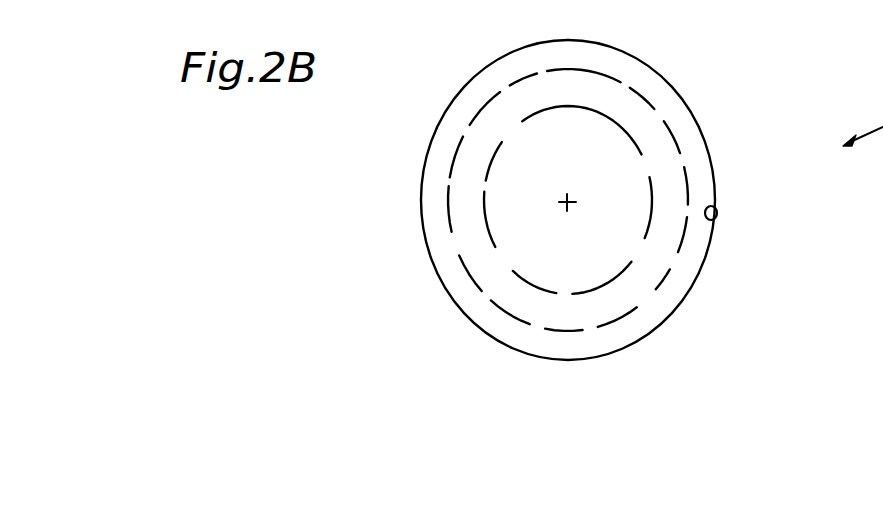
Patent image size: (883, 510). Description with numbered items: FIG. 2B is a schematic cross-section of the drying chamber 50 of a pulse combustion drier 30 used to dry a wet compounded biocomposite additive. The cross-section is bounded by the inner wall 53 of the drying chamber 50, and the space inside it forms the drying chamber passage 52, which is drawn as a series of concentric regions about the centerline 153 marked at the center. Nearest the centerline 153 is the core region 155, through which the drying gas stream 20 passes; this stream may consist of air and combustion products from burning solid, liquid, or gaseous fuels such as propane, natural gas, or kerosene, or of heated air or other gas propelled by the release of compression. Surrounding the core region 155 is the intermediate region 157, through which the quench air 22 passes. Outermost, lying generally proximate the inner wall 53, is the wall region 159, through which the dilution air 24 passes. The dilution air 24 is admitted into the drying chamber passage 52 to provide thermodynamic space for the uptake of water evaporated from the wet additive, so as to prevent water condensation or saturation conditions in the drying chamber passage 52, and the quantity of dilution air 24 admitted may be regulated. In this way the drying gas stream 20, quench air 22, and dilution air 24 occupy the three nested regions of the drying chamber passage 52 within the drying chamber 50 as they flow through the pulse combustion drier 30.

The drying gas stream 20 is at (527, 233).
The quench air 22 is at (522, 305).
The dilution air 24 is at (567, 345).
The pulse combustion drier 30 is at (412, 208).
The drying chamber 50 is at (710, 155).
The drying chamber passage 52 is at (633, 75).
The inner wall 53 is at (717, 207).
The centerline 153 is at (572, 198).
The core region 155 is at (537, 130).
The intermediate region 157 is at (490, 130).
The wall region 159 is at (447, 138).